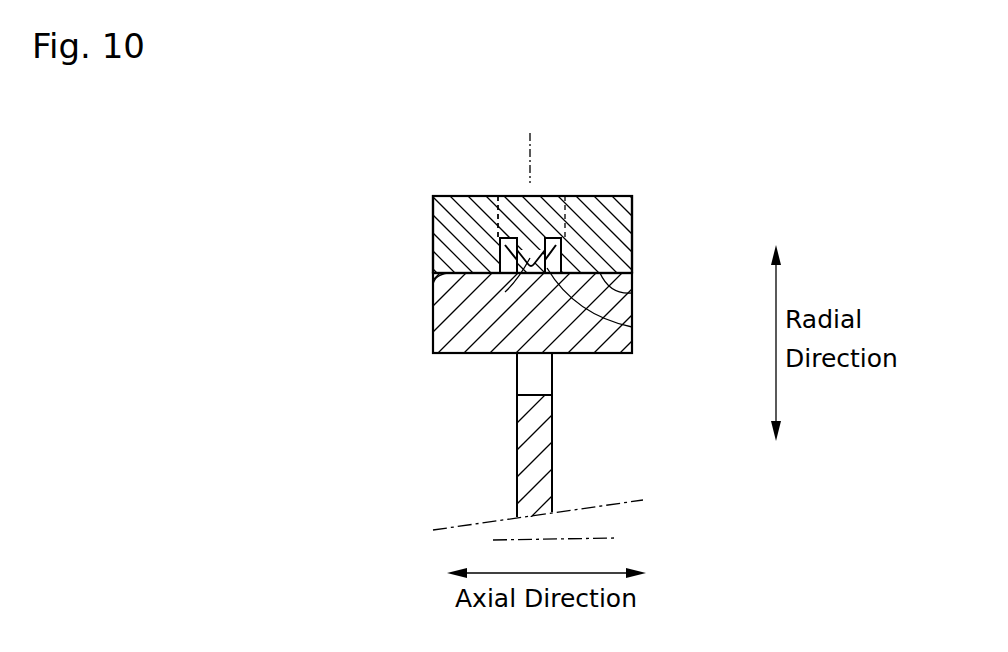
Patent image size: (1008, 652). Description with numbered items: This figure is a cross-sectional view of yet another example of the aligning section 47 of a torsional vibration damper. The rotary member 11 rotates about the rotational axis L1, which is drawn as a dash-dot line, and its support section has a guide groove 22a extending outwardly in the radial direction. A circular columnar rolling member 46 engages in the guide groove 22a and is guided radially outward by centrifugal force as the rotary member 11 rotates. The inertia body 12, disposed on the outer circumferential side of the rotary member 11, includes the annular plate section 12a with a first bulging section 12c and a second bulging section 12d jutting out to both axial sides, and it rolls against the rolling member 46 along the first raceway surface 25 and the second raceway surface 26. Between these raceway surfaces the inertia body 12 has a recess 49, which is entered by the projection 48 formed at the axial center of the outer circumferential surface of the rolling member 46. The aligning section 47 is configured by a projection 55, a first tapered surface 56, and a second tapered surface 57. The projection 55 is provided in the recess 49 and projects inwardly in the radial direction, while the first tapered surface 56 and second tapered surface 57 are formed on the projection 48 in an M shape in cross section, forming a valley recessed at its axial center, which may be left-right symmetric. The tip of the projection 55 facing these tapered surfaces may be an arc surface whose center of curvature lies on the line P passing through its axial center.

The rotary member 11 is at (547, 433).
The inertia body 12 is at (632, 204).
The plate section 12a is at (520, 210).
The first bulging section 12c is at (442, 213).
The second bulging section 12d is at (596, 208).
The guide groove 22a is at (533, 375).
The first raceway surface 25 is at (440, 285).
The second raceway surface 26 is at (633, 292).
The rolling member 46 is at (617, 305).
The aligning section 47 is at (572, 251).
The projection 48 is at (500, 253).
The recess 49 is at (497, 223).
The projection 55 is at (533, 255).
The first tapered surface 56 is at (505, 292).
The second tapered surface 57 is at (632, 327).
The rotational axis L1 is at (610, 538).
The line P is at (531, 146).